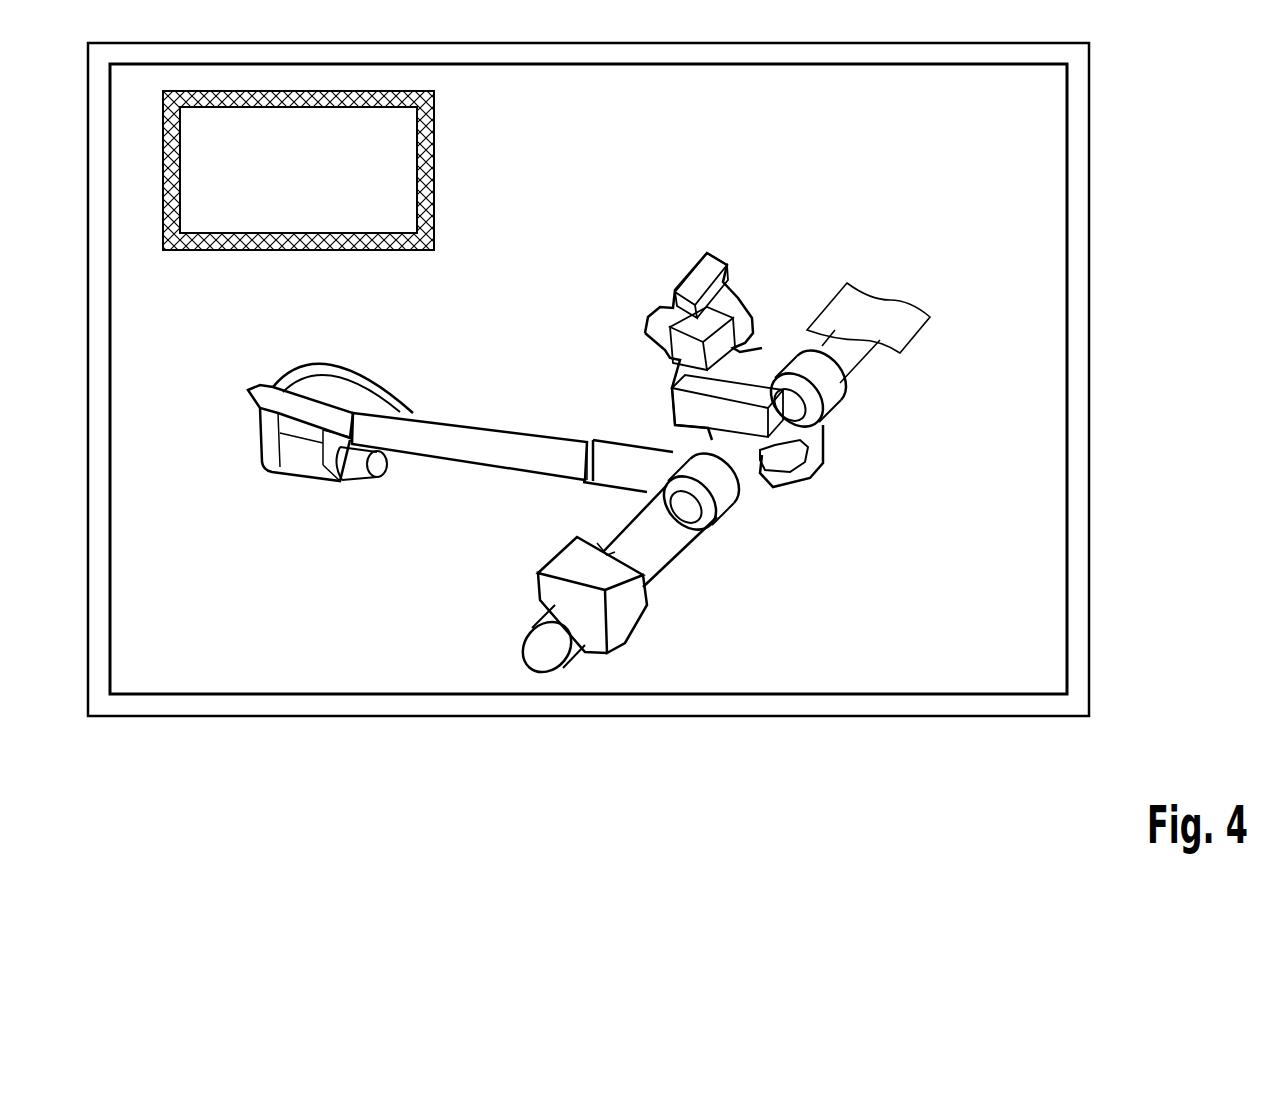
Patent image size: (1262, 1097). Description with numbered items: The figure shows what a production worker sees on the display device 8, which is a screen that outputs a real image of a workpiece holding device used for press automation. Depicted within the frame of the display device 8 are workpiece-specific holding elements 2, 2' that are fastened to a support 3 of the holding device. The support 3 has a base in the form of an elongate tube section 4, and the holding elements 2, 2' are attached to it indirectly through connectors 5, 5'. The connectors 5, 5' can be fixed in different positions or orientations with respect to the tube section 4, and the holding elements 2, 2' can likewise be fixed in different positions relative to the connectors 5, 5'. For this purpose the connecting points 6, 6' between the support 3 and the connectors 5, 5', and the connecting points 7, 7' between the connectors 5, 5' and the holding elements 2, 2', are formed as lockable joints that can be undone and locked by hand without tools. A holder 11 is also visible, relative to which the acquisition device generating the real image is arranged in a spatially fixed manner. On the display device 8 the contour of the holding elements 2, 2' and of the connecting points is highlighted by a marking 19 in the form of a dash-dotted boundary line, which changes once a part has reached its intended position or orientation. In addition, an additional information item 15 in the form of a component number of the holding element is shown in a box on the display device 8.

The workpiece-specific holding element 2 is at (423, 398).
The workpiece-specific holding element 2' is at (707, 351).
The support 3 is at (678, 597).
The tube section 4 is at (655, 540).
The connector 5 is at (536, 418).
The connector 5' is at (732, 315).
The connecting point 6 is at (725, 499).
The connecting point 6' is at (833, 393).
The connecting point 7 is at (330, 363).
The connecting point 7' is at (736, 244).
The display device 8 is at (1098, 147).
The holder 11 is at (908, 333).
The additional information item 15 is at (445, 147).
The marking 19 is at (492, 480).